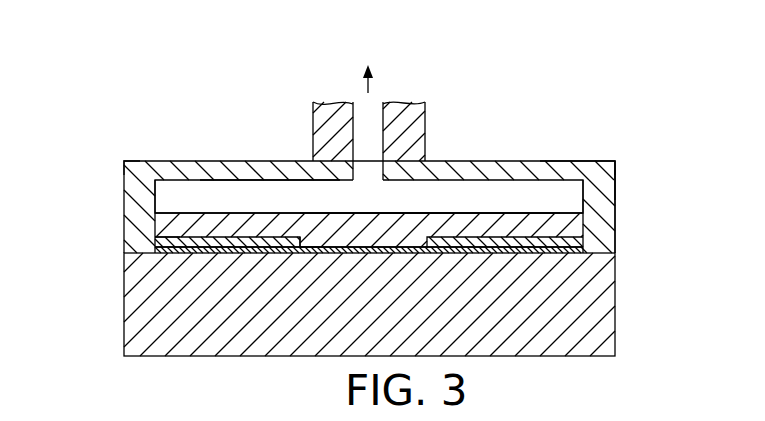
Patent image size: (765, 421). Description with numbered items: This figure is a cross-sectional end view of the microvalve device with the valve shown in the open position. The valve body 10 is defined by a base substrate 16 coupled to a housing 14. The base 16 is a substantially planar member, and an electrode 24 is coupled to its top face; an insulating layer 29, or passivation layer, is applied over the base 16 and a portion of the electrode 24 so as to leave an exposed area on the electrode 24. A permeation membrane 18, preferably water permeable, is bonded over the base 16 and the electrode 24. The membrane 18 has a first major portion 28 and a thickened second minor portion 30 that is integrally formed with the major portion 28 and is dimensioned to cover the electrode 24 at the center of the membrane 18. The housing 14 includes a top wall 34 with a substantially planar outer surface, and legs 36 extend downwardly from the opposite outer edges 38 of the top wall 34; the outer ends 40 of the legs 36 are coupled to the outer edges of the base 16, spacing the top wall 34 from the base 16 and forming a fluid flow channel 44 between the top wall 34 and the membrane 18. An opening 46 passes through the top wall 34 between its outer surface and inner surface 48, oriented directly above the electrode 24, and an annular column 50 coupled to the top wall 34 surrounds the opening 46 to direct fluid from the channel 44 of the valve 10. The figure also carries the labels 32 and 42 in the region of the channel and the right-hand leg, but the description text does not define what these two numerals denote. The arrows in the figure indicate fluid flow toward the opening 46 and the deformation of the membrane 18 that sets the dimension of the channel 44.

The valve body 10 is at (625, 75).
The housing 14 is at (626, 167).
The base substrate 16 is at (603, 315).
The permeation membrane 18 is at (191, 206).
The electrode 24 is at (402, 253).
The first major portion 28 is at (544, 252).
The insulating layer 29 is at (157, 247).
The second minor portion 30 is at (290, 250).
The chamber floor 32 is at (403, 213).
The top wall 34 is at (591, 156).
The legs 36 is at (453, 161).
The outer edges 38 is at (133, 165).
The outer ends 40 is at (613, 252).
The outer wall surface 42 is at (617, 183).
The fluid flow channel 44 is at (517, 198).
The opening 46 is at (370, 173).
The inner surface 48 is at (257, 180).
The annular column 50 is at (425, 125).